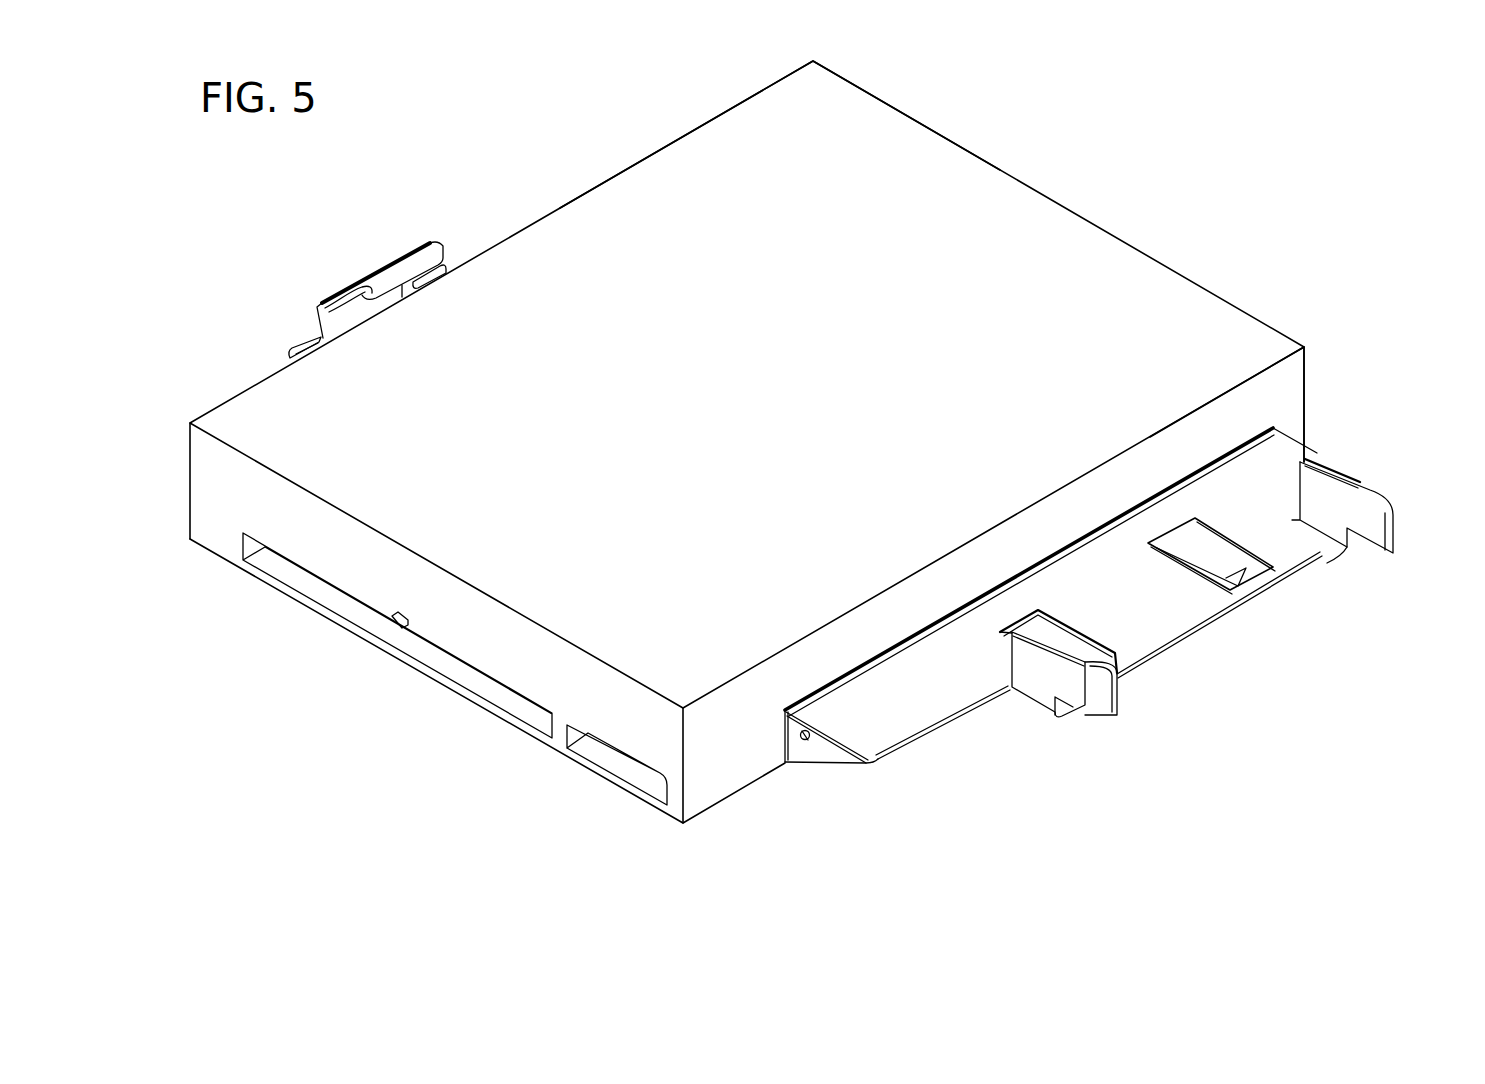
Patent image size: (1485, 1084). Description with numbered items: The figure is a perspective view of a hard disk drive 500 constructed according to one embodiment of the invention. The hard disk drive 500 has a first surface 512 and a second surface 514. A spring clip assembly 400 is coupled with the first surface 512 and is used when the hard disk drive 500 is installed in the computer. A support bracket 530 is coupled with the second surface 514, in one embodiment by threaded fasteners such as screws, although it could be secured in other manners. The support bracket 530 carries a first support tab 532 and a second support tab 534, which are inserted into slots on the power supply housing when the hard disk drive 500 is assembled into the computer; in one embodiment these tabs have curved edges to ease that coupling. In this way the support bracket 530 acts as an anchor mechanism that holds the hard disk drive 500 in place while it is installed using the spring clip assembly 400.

The spring clip assembly 400 is at (364, 275).
The hard disk drive 500 is at (1068, 198).
The first surface 512 is at (723, 112).
The second surface 514 is at (1282, 413).
The support bracket 530 is at (933, 738).
The first support tab 532 is at (1103, 707).
The second support tab 534 is at (1395, 535).